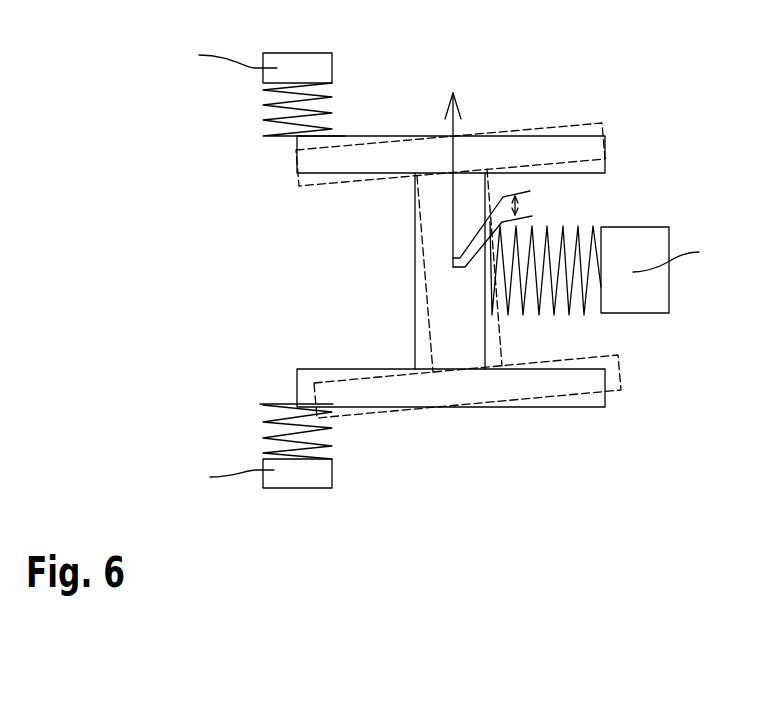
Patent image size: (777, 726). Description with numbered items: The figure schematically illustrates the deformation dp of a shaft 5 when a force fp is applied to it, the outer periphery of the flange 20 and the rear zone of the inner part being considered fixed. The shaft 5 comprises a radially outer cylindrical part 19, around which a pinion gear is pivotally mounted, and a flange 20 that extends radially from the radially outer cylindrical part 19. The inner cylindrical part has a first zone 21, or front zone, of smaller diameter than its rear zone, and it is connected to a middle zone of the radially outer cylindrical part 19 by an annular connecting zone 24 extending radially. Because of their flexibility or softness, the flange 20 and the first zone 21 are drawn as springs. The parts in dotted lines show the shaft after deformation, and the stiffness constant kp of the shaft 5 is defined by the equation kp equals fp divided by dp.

The shaft 5 is at (516, 100).
The radially outer cylindrical part 19 is at (566, 152).
The flange 20 is at (272, 106).
The first zone 21 is at (556, 298).
The connecting zone 24 is at (443, 280).